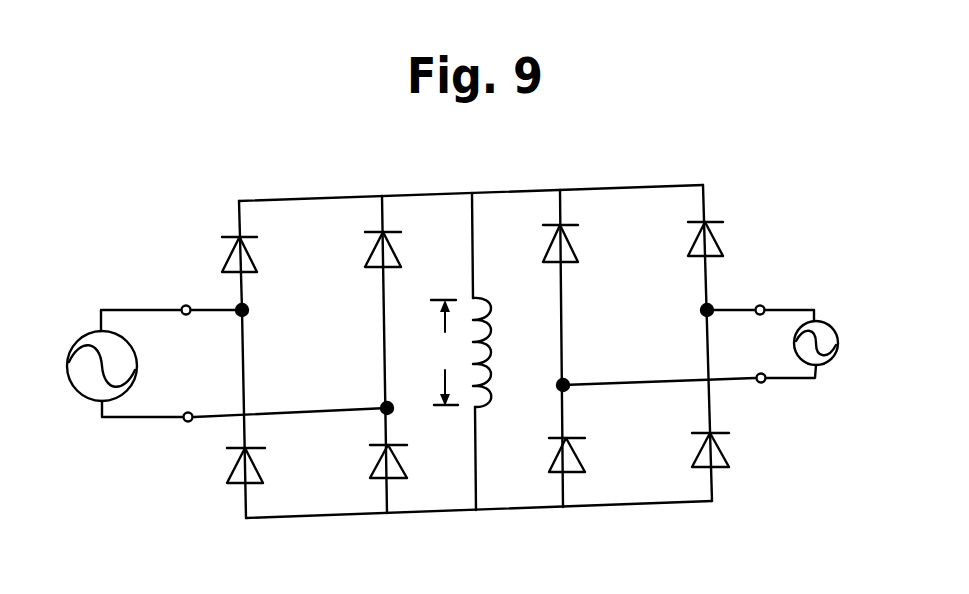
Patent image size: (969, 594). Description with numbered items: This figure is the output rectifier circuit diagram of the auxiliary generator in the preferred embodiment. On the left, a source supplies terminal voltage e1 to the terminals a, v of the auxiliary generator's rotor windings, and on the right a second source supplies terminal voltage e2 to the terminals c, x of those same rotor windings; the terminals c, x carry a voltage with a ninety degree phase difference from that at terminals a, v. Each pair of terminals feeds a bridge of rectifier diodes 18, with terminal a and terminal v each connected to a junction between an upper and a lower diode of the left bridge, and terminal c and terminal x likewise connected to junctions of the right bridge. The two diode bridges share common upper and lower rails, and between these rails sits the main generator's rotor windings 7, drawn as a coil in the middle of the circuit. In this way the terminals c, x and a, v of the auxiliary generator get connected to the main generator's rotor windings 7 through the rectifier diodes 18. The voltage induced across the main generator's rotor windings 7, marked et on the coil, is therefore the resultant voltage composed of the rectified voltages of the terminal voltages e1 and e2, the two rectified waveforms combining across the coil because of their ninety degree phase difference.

The rectifier diodes 18 is at (210, 258).
The main generator's rotor windings 7 is at (500, 352).
The terminal a is at (171, 303).
The terminal v is at (244, 429).
The terminal c is at (760, 298).
The terminal x is at (689, 391).
The terminal voltage e1 is at (85, 366).
The terminal voltage e2 is at (837, 344).
The transformer voltage et is at (444, 353).